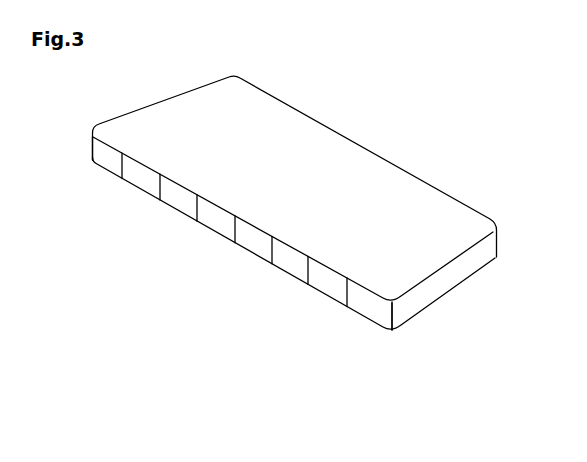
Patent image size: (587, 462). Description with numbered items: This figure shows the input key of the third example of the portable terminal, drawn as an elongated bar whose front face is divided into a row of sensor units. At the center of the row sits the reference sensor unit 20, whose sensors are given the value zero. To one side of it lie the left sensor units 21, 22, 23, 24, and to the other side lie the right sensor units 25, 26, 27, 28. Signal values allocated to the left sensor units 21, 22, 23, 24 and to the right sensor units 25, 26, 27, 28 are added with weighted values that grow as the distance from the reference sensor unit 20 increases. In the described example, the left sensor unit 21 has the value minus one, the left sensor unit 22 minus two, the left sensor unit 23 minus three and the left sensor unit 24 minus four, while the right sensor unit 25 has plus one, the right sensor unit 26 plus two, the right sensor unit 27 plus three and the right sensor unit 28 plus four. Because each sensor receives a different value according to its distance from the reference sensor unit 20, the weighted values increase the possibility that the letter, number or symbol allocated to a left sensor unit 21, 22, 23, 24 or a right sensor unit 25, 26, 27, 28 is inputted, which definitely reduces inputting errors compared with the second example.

The reference sensor unit 20 is at (235, 243).
The left sensor unit 21 is at (197, 222).
The left sensor unit 22 is at (160, 200).
The left sensor unit 23 is at (122, 179).
The left sensor unit 24 is at (92, 163).
The right sensor unit 25 is at (272, 264).
The right sensor unit 26 is at (308, 284).
The right sensor unit 27 is at (347, 306).
The right sensor unit 28 is at (392, 330).